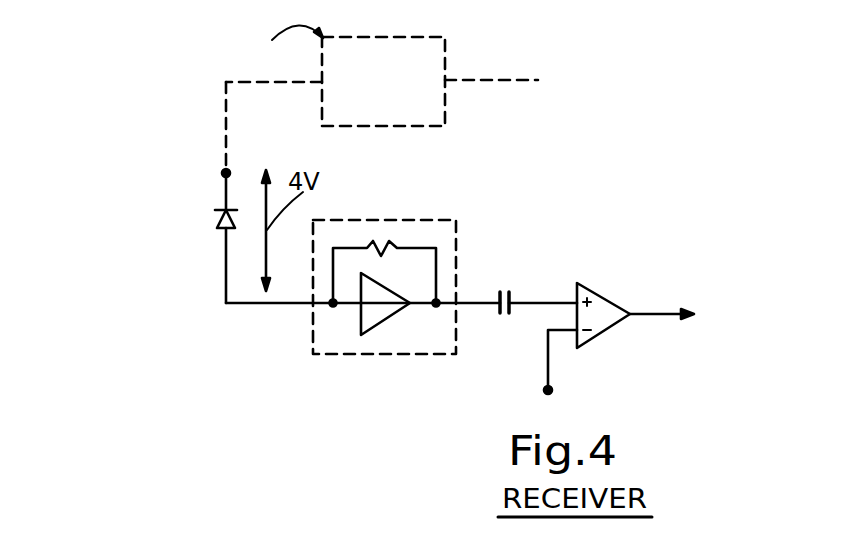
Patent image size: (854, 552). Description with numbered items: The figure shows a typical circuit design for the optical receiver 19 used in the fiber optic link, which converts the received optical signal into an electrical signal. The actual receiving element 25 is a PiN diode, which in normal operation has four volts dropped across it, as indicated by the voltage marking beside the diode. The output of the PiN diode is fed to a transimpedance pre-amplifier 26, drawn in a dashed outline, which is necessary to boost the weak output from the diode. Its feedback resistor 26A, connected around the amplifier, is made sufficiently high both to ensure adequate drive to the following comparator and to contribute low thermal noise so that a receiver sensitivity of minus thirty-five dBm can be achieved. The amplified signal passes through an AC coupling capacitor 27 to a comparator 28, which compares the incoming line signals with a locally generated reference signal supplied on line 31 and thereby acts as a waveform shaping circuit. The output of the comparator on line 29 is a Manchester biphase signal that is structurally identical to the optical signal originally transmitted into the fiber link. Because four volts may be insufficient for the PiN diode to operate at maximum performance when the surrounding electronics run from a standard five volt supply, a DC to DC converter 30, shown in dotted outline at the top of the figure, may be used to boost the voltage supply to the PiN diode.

The optical receiver 19 is at (483, 180).
The receiving element 25 is at (218, 223).
The transimpedance pre-amplifier 26 is at (367, 348).
The feedback resistor 26A is at (383, 244).
The AC coupling capacitor 27 is at (508, 290).
The comparator 28 is at (602, 312).
The line 29 is at (653, 316).
The DC to DC converter 30 is at (398, 92).
The line 31 is at (546, 390).